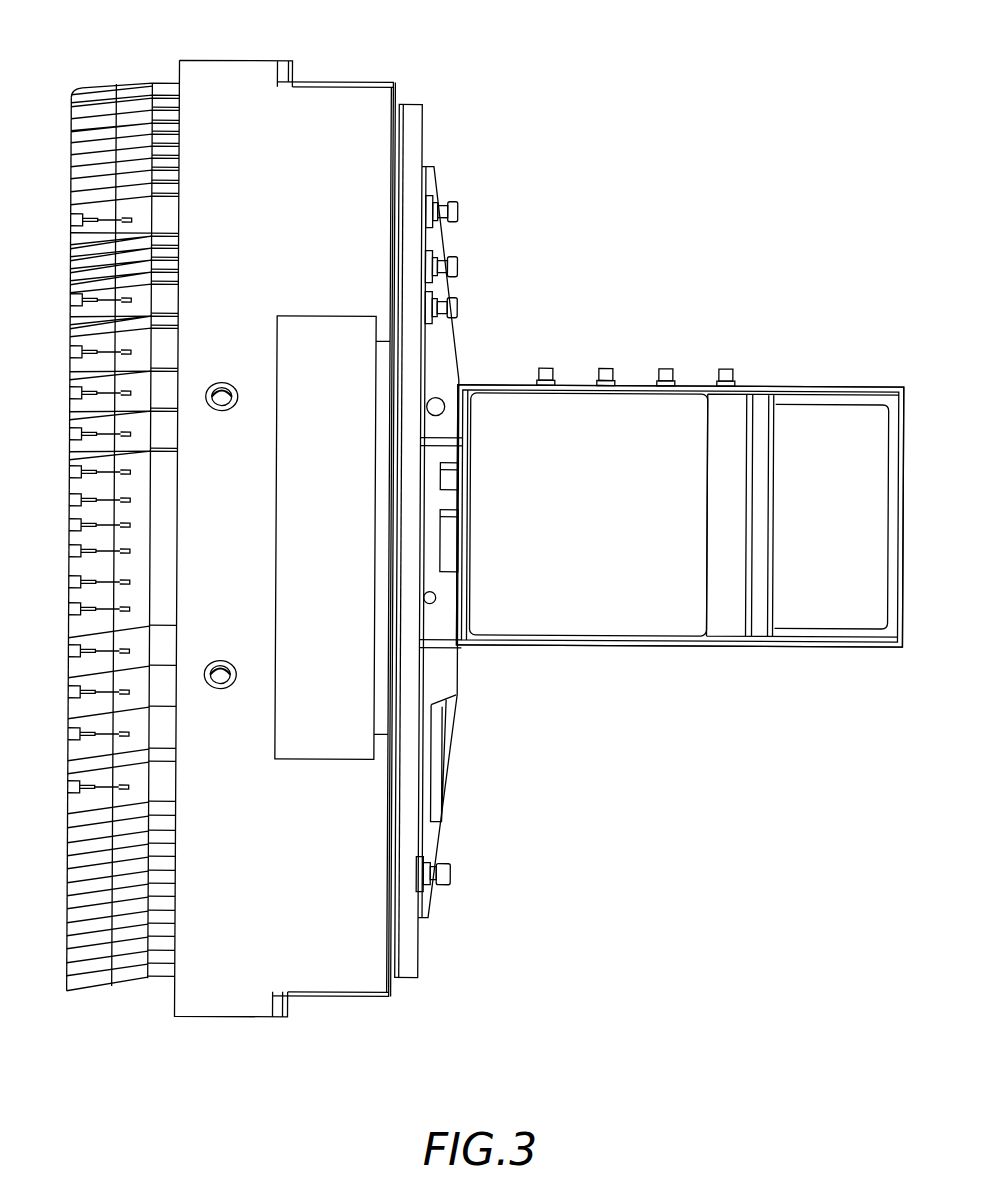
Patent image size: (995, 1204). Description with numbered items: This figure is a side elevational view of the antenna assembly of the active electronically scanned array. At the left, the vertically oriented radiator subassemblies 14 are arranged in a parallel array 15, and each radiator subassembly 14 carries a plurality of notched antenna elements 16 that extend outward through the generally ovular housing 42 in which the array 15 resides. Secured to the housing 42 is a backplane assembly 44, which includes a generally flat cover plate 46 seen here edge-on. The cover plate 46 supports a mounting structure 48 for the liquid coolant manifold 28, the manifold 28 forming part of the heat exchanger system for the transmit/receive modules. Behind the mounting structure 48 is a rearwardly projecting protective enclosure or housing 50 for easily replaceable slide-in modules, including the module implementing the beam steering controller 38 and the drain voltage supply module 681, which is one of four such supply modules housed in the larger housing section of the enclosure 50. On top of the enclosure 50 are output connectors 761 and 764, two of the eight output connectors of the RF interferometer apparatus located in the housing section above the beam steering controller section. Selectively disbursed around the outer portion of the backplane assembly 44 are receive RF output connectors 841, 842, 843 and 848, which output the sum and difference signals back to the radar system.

The radiator subassembly 14 is at (98, 95).
The parallel array 15 is at (124, 74).
The notched antenna element 16 is at (78, 235).
The liquid coolant manifold 28 is at (445, 347).
The beam steering controller 38 is at (598, 625).
The housing 42 is at (345, 100).
The backplane assembly 44 is at (506, 692).
The cover plate 46 is at (393, 988).
The mounting structure 48 is at (413, 132).
The protective enclosure 50 is at (628, 385).
The drain voltage supply module 681 is at (815, 620).
The output connector 761 is at (727, 367).
The output connector 764 is at (547, 367).
The receive RF output connector 841 is at (457, 308).
The receive RF output connector 842 is at (457, 267).
The receive RF output connector 843 is at (457, 212).
The receive RF output connector 848 is at (454, 873).